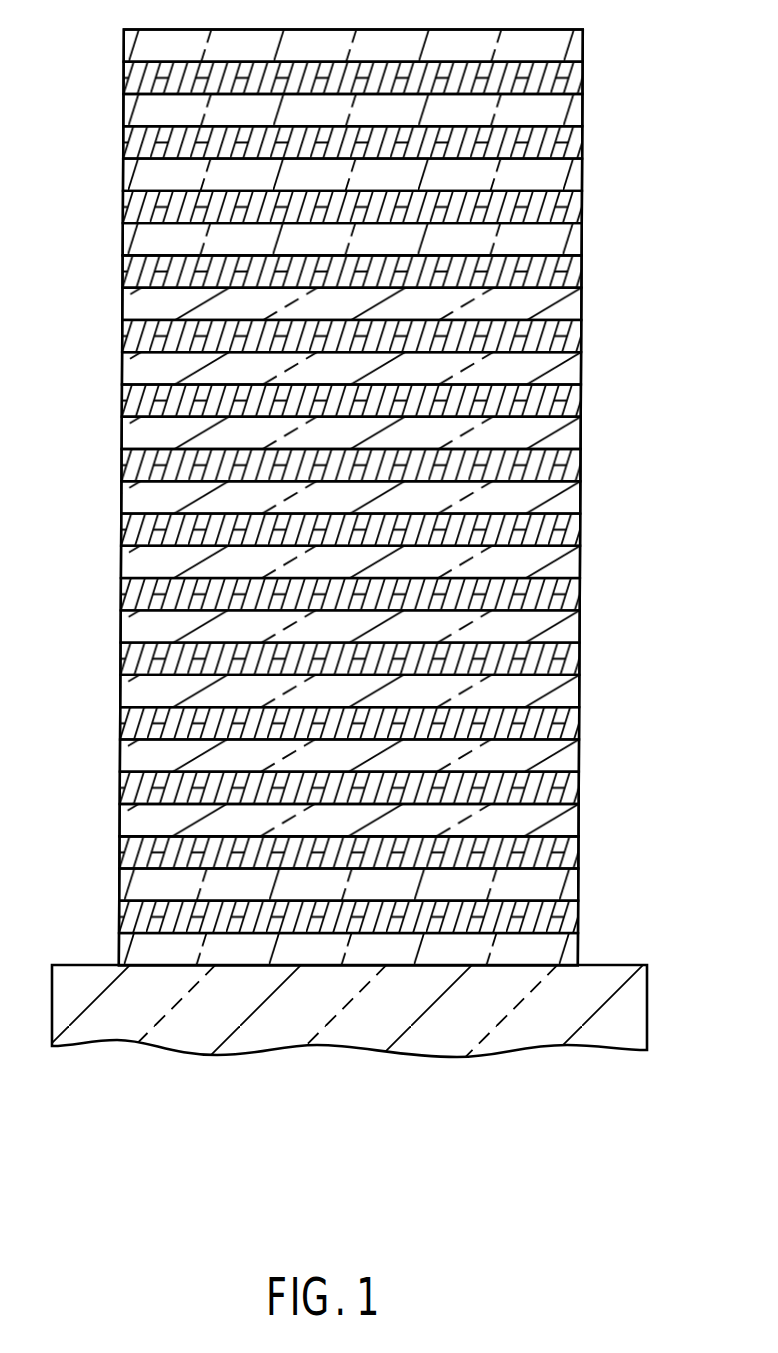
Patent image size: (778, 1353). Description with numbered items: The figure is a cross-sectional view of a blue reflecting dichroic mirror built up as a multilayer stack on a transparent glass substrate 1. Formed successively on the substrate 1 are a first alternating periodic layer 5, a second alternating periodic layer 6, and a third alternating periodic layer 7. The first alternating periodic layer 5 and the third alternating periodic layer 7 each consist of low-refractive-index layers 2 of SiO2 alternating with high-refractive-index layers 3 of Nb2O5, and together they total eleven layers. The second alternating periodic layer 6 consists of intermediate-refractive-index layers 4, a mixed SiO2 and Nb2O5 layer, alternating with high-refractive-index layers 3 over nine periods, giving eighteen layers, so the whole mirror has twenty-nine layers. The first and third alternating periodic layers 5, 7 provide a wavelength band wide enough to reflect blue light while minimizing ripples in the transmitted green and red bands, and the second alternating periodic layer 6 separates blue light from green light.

The transparent glass substrate 1 is at (628, 1014).
The low-refractive-index layer 2 is at (379, 499).
The high-refractive-index layer 3 is at (379, 498).
The intermediate-refractive-index layer 4 is at (379, 563).
The first alternating periodic layer 5 is at (641, 840).
The second alternating periodic layer 6 is at (641, 262).
The third alternating periodic layer 7 is at (641, 26).